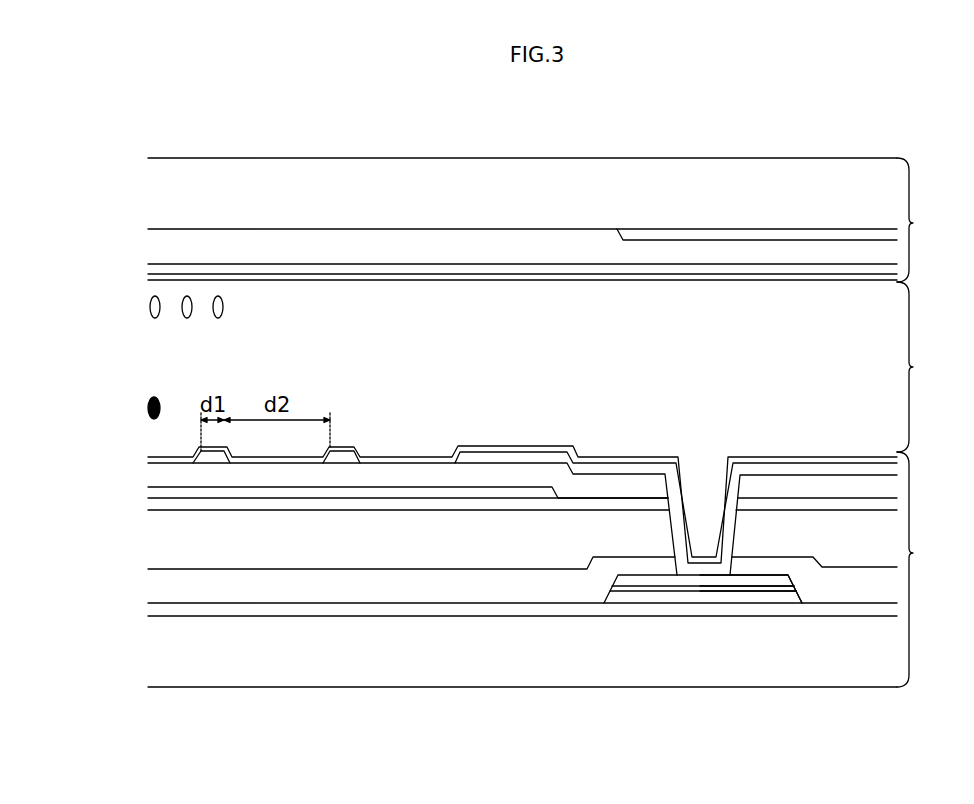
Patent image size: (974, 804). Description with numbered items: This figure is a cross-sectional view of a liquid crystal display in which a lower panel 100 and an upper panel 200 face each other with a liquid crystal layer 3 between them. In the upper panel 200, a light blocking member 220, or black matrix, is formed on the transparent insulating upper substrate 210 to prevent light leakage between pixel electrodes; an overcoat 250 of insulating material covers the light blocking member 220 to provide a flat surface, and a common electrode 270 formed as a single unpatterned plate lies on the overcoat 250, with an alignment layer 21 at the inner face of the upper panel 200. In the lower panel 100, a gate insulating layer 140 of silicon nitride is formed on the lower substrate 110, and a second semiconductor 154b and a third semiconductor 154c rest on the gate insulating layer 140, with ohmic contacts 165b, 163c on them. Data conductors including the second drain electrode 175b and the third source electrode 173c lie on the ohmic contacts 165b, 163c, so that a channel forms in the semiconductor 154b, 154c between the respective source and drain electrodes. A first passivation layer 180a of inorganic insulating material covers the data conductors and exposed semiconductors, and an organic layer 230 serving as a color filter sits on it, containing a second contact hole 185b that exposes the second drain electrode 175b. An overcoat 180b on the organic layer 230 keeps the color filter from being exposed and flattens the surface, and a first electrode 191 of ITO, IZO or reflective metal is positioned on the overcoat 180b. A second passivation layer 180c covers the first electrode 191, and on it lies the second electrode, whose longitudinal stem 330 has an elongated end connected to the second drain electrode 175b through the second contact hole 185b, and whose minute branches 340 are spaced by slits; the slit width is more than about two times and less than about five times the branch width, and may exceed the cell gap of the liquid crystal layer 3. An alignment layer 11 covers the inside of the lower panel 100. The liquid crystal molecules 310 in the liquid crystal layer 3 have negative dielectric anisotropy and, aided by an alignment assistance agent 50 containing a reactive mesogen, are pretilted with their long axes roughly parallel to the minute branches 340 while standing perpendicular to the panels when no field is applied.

The upper substrate 210 is at (331, 178).
The overcoat 250 is at (450, 248).
The common electrode 270 is at (541, 275).
The light blocking member 220 is at (680, 237).
The alignment layer 21 is at (678, 282).
The upper panel 200 is at (927, 220).
The liquid crystal layer 3 is at (917, 367).
The lower panel 100 is at (927, 569).
The liquid crystal molecules 310 is at (224, 307).
The alignment assistance agent 50 is at (148, 400).
The minute branches 340 is at (196, 452).
The longitudinal stem 330 is at (497, 452).
The second passivation layer 180c is at (422, 477).
The alignment layer 11 is at (609, 457).
The second contact hole 185b is at (703, 462).
The first electrode 191 is at (183, 490).
The overcoat 180b is at (242, 503).
The organic layer 230 is at (302, 545).
The first passivation layer 180a is at (383, 592).
The gate insulating layer 140 is at (447, 608).
The lower substrate 110 is at (522, 662).
The second semiconductor 154b is at (617, 600).
The ohmic contact 165b is at (628, 593).
The second drain electrode 175b is at (650, 591).
The third source electrode 173c is at (753, 582).
The ohmic contact 163c is at (775, 591).
The third semiconductor 154c is at (790, 598).